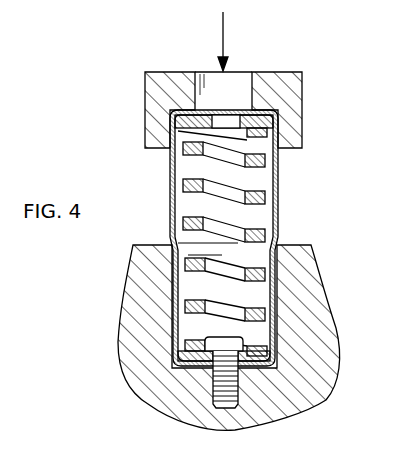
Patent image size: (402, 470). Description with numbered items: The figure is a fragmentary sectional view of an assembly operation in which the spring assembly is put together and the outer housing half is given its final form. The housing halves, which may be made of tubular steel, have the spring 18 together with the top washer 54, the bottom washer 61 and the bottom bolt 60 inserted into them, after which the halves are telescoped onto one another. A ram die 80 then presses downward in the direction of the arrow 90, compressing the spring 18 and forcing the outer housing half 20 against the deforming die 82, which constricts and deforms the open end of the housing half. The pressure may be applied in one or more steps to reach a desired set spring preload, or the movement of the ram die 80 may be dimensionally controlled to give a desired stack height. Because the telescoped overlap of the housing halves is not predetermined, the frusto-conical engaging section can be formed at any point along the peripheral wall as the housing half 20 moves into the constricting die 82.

The spring 18 is at (276, 196).
The housing half 20 is at (279, 176).
The top washer 54 is at (264, 115).
The bottom bolt 60 is at (220, 383).
The bottom washer 61 is at (270, 352).
The ram die 80 is at (173, 80).
The deforming die 82 is at (306, 250).
The arrow 90 is at (224, 20).